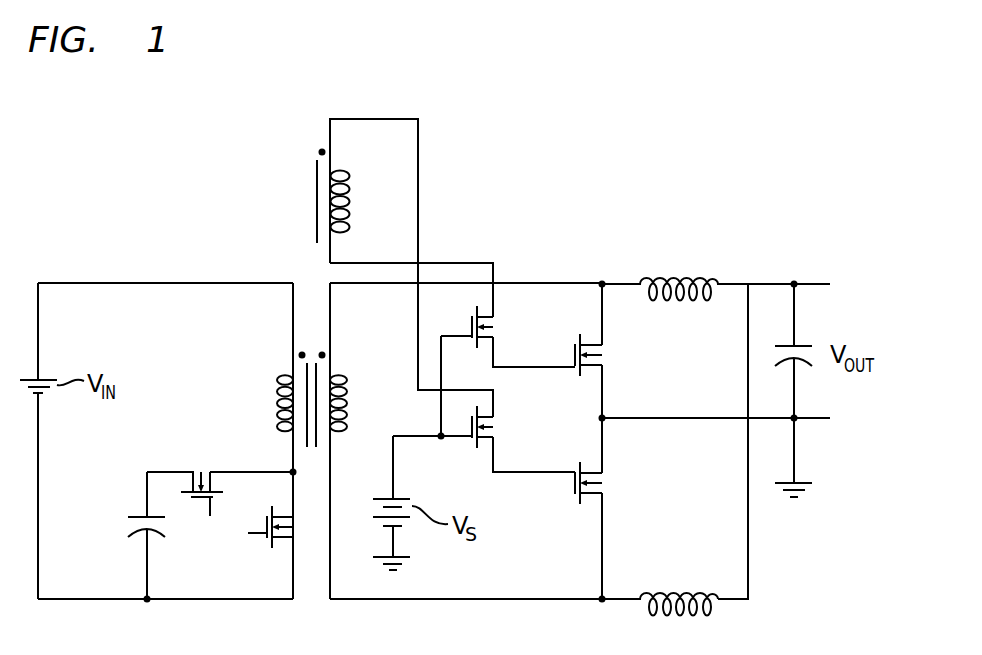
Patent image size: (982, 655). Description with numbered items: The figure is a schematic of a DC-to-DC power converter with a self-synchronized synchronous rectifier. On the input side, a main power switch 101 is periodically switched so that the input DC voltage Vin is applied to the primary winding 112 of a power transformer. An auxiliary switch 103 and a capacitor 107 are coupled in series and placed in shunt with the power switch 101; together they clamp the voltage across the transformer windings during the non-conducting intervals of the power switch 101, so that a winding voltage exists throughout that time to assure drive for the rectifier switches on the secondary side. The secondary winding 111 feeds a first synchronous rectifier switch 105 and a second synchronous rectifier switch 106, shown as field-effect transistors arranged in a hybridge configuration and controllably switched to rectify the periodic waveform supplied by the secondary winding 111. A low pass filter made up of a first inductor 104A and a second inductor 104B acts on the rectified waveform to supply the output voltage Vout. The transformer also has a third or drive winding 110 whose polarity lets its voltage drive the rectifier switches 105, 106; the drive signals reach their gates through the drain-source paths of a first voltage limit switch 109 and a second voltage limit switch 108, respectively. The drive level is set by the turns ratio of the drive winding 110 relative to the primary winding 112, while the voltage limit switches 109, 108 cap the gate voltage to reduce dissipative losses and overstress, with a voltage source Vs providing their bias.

The main power switch 101 is at (262, 540).
The auxiliary switch 103 is at (202, 470).
The first inductor 104A is at (681, 275).
The second inductor 104B is at (684, 592).
The first synchronous rectifier switch 105 is at (604, 352).
The second synchronous rectifier switch 106 is at (604, 490).
The capacitor 107 is at (128, 520).
The second voltage limit switch 108 is at (497, 422).
The first voltage limit switch 109 is at (497, 324).
The drive winding 110 is at (348, 182).
The secondary winding 111 is at (348, 383).
The primary winding 112 is at (275, 383).